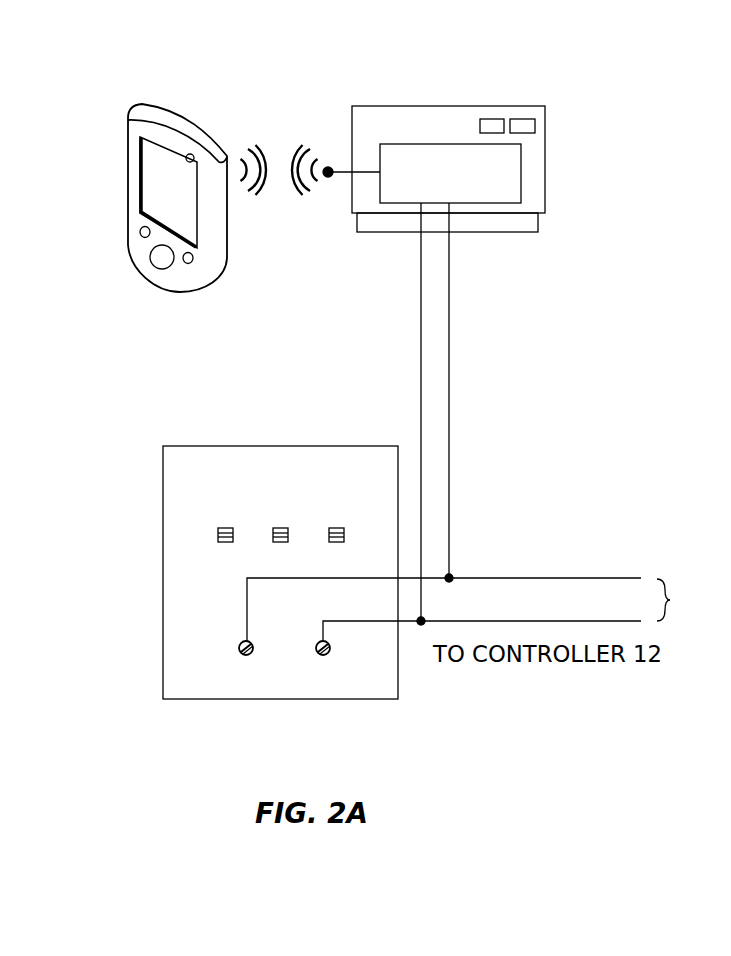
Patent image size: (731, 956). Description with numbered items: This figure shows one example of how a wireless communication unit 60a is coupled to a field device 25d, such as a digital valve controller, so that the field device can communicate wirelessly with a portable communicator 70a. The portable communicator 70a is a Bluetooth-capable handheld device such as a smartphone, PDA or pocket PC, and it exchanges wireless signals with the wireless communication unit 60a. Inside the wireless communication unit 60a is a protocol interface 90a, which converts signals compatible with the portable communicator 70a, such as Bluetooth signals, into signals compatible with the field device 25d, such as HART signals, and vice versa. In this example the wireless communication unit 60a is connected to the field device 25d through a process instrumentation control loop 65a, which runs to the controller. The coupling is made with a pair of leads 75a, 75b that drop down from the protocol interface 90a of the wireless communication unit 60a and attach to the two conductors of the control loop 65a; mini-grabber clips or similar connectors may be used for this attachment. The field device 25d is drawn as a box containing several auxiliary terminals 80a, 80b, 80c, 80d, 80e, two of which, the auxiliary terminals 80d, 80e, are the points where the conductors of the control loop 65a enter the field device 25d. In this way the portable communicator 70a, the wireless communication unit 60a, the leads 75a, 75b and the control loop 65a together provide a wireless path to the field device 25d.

The portable communicator 70a is at (217, 141).
The wireless communication unit 60a is at (393, 106).
The protocol interface 90a is at (392, 144).
The lead 75a is at (421, 330).
The lead 75b is at (449, 302).
The field device 25d is at (323, 446).
The auxiliary terminal 80a is at (225, 528).
The auxiliary terminal 80b is at (280, 542).
The auxiliary terminal 80c is at (337, 528).
The auxiliary terminal 80d is at (242, 655).
The auxiliary terminal 80e is at (319, 655).
The control loop 65a is at (482, 609).